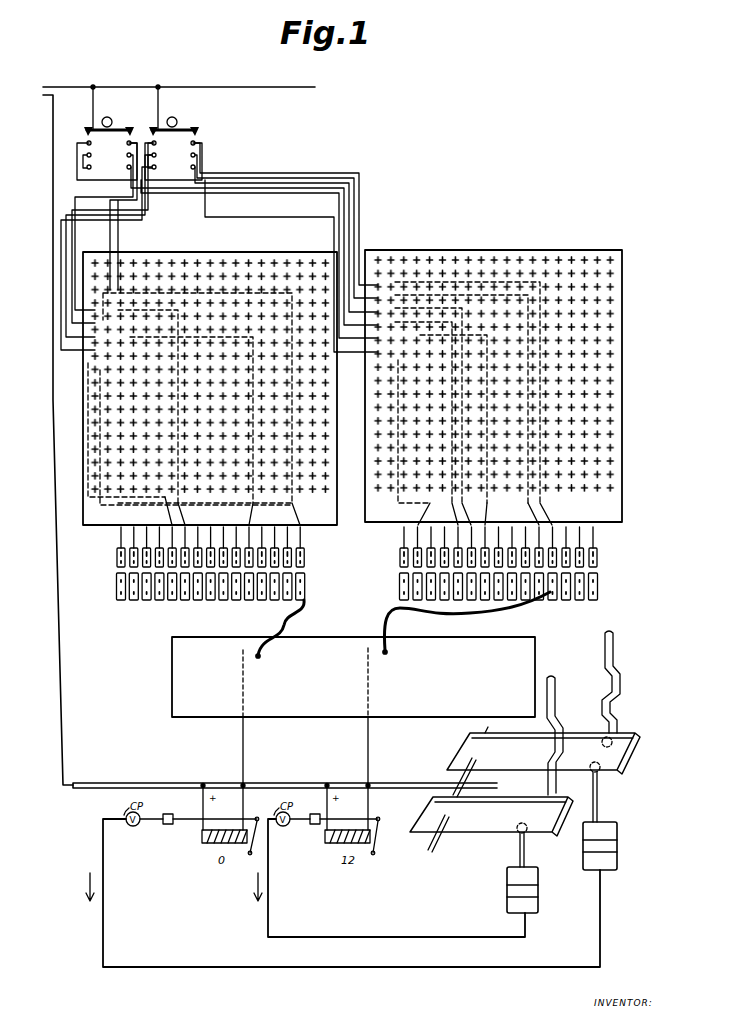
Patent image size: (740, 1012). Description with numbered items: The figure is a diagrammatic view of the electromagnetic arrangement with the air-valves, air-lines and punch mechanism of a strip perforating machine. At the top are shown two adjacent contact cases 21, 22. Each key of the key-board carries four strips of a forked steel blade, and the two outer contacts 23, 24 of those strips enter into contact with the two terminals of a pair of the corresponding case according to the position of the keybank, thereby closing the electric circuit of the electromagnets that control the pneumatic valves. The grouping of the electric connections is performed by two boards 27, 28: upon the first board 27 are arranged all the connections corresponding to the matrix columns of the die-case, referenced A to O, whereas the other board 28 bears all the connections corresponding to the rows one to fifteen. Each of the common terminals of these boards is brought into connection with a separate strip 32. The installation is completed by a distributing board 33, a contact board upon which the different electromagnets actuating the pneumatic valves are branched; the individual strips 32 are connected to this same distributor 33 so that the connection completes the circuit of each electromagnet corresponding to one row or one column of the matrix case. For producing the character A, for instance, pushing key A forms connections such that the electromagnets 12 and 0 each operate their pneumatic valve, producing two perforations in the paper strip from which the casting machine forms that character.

The contact case 21 is at (107, 160).
The contact case 22 is at (173, 160).
The contact 23 is at (90, 132).
The contact 24 is at (131, 129).
The board 27 is at (204, 252).
The board 28 is at (443, 252).
The strip 32 is at (400, 588).
The distributing board 33 is at (200, 717).
The electromagnet 12 is at (561, 731).
The electromagnet 0 is at (613, 678).